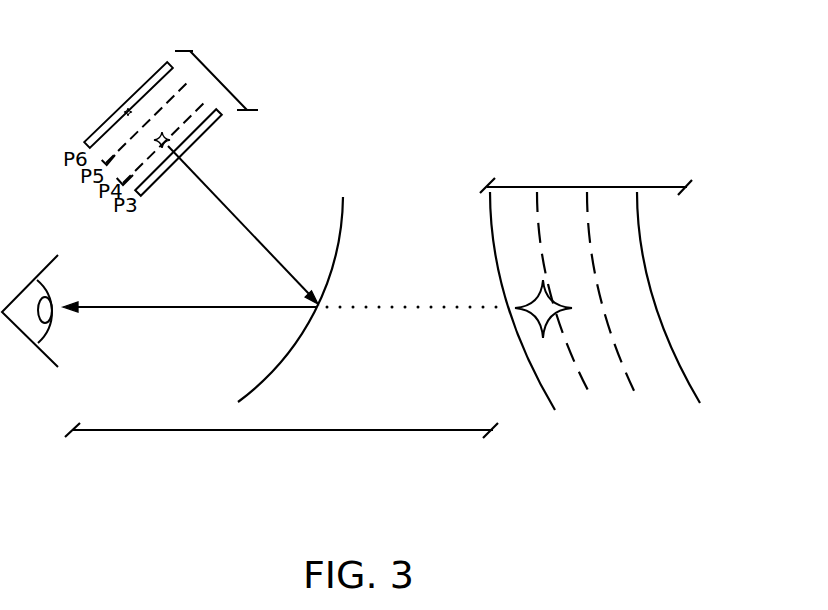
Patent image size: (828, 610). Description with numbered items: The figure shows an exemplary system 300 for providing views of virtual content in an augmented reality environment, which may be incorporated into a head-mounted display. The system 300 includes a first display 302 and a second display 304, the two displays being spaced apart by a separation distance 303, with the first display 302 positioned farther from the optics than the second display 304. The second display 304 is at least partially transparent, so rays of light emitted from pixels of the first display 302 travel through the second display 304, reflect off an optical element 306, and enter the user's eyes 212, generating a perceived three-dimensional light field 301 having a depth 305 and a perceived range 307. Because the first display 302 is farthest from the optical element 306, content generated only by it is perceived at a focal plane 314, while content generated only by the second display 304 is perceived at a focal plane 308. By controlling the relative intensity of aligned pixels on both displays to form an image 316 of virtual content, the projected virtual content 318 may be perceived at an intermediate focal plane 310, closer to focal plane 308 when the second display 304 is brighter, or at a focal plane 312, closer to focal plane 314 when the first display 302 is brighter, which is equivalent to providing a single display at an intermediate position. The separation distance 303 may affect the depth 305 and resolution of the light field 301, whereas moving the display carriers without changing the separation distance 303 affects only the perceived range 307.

The system 300 is at (393, 78).
The three-dimensional light field 301 is at (637, 142).
The first display 302 is at (95, 130).
The separation distance 303 is at (228, 91).
The second display 304 is at (222, 112).
The depth 305 is at (523, 187).
The optical element 306 is at (288, 347).
The perceived range 307 is at (272, 431).
The focal plane 308 is at (555, 410).
The focal plane 310 is at (592, 398).
The focal plane 312 is at (637, 397).
The focal plane 314 is at (700, 403).
The image 316 is at (170, 138).
The projected virtual content 318 is at (572, 308).
The eyes 212 is at (53, 298).